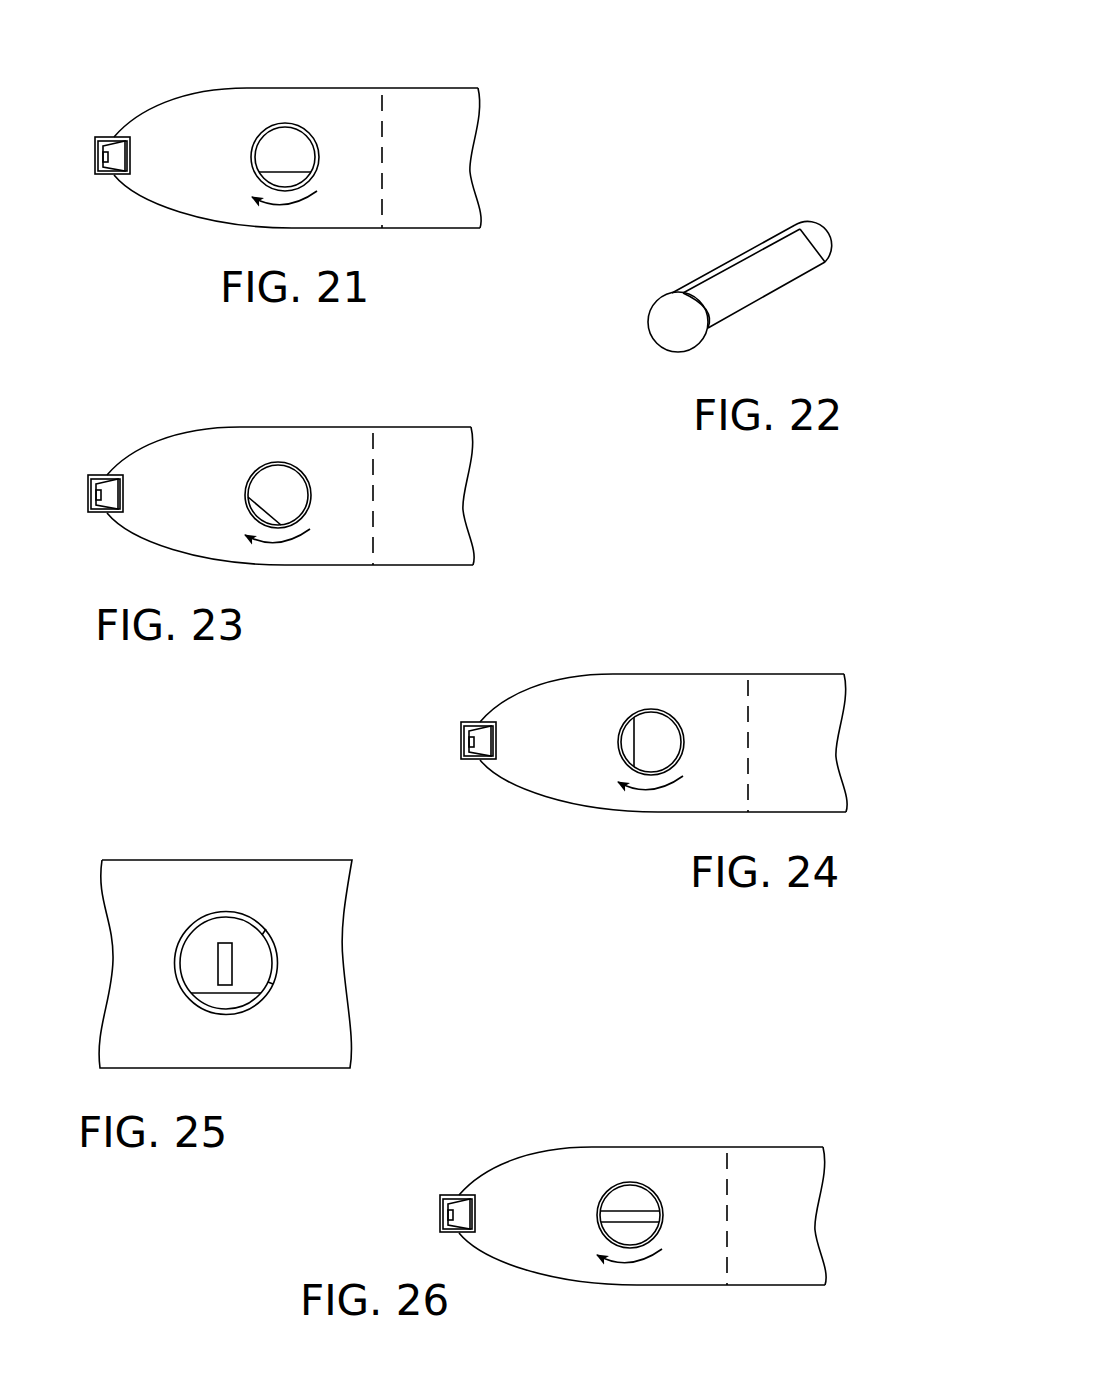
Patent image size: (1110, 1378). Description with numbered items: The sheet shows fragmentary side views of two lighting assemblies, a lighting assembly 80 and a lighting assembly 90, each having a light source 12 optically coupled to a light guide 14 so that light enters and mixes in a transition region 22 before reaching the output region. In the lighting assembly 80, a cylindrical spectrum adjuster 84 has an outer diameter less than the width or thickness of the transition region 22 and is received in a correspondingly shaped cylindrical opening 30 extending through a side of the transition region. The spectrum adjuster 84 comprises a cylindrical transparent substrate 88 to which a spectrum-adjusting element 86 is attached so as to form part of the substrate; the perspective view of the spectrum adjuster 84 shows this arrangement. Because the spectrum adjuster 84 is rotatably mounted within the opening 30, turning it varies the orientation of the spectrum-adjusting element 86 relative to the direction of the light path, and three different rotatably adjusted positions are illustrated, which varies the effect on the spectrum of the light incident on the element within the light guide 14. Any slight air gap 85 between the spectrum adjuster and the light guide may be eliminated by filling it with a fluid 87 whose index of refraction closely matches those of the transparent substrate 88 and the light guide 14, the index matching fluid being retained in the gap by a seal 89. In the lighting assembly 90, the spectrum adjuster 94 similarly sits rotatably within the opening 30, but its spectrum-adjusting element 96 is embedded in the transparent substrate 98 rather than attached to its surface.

In FIG. 21, the light source 12 is at (93, 185).
In FIG. 23, the light source 12 is at (82, 519).
In FIG. 24, the light source 12 is at (427, 740).
In FIG. 26, the light source 12 is at (410, 1206).
In FIG. 21, the light guide 14 is at (431, 185).
In FIG. 23, the light guide 14 is at (423, 526).
In FIG. 24, the light guide 14 is at (797, 707).
In FIG. 26, the light guide 14 is at (789, 1184).
In FIG. 21, the transition region 22 is at (297, 138).
In FIG. 23, the transition region 22 is at (290, 472).
In FIG. 24, the transition region 22 is at (663, 717).
In FIG. 25, the transition region 22 is at (268, 878).
In FIG. 26, the transition region 22 is at (642, 1192).
In FIG. 21, the cylindrical opening 30 is at (339, 157).
In FIG. 23, the cylindrical opening 30 is at (305, 495).
In FIG. 24, the cylindrical opening 30 is at (683, 744).
In FIG. 25, the cylindrical opening 30 is at (278, 962).
In FIG. 26, the cylindrical opening 30 is at (659, 1219).
In FIG. 21, the lighting assembly 80 is at (268, 151).
In FIG. 23, the lighting assembly 80 is at (258, 494).
In FIG. 24, the lighting assembly 80 is at (603, 702).
In FIG. 25, the lighting assembly 80 is at (333, 843).
In FIG. 21, the spectrum adjuster 84 is at (260, 145).
In FIG. 22, the spectrum adjuster 84 is at (706, 278).
In FIG. 23, the spectrum adjuster 84 is at (270, 495).
In FIG. 24, the spectrum adjuster 84 is at (630, 740).
In FIG. 25, the spectrum adjuster 84 is at (262, 975).
In FIG. 25, the air gap 85 is at (277, 975).
In FIG. 21, the spectrum-adjusting element 86 is at (317, 196).
In FIG. 22, the spectrum-adjusting element 86 is at (765, 283).
In FIG. 23, the spectrum-adjusting element 86 is at (231, 520).
In FIG. 24, the spectrum-adjusting element 86 is at (592, 749).
In FIG. 25, the spectrum-adjusting element 86 is at (223, 1000).
In FIG. 25, the fluid 87 is at (273, 943).
In FIG. 21, the transparent substrate 88 is at (230, 128).
In FIG. 22, the transparent substrate 88 is at (663, 320).
In FIG. 23, the transparent substrate 88 is at (308, 486).
In FIG. 24, the transparent substrate 88 is at (676, 731).
In FIG. 25, the transparent substrate 88 is at (212, 935).
In FIG. 25, the seal 89 is at (245, 1012).
In FIG. 26, the lighting assembly 90 is at (598, 1166).
In FIG. 26, the spectrum adjuster 94 is at (612, 1181).
In FIG. 26, the spectrum-adjusting element 96 is at (660, 1194).
In FIG. 26, the transparent substrate 98 is at (633, 1172).